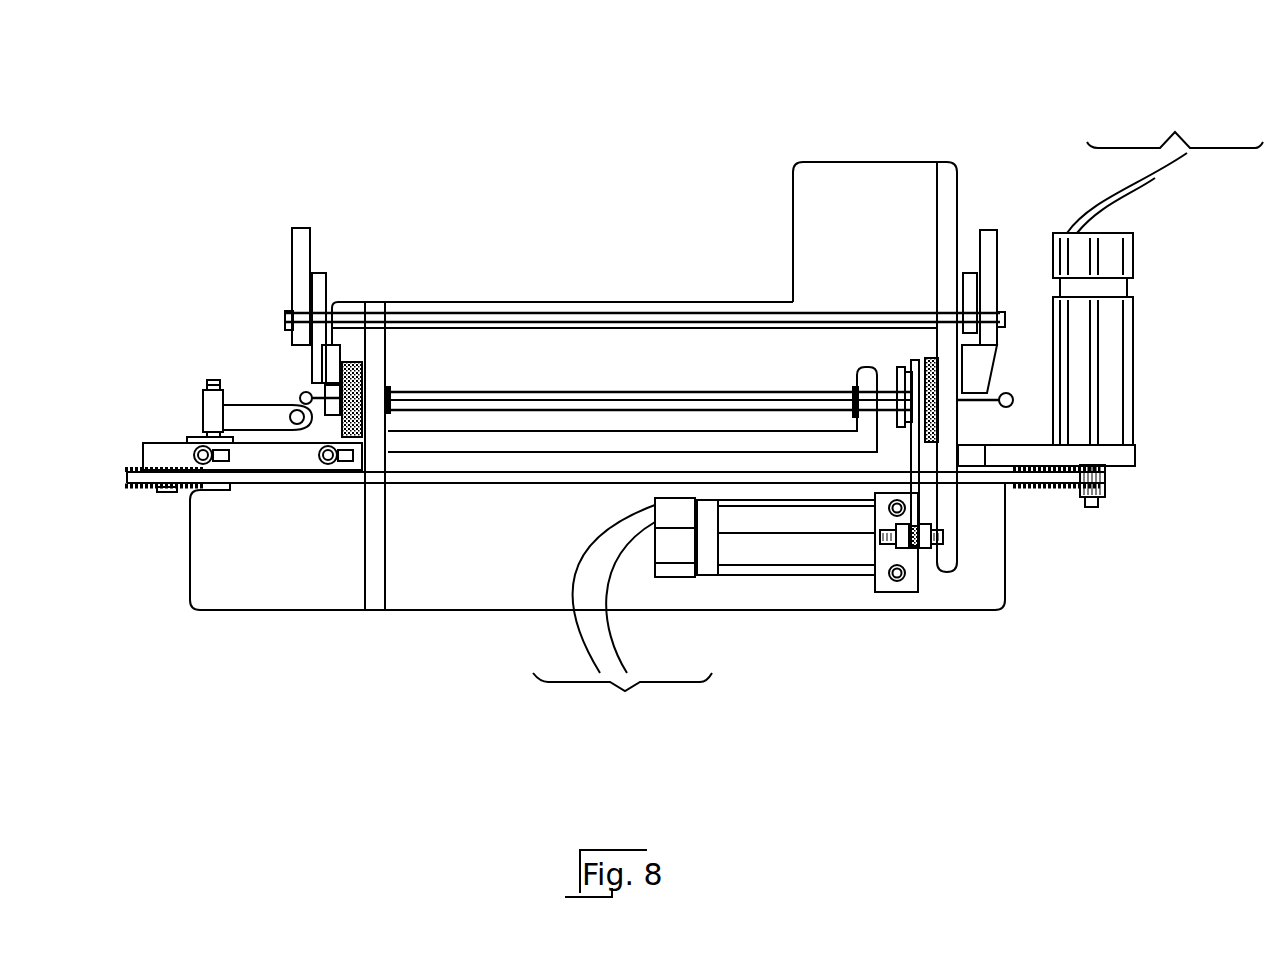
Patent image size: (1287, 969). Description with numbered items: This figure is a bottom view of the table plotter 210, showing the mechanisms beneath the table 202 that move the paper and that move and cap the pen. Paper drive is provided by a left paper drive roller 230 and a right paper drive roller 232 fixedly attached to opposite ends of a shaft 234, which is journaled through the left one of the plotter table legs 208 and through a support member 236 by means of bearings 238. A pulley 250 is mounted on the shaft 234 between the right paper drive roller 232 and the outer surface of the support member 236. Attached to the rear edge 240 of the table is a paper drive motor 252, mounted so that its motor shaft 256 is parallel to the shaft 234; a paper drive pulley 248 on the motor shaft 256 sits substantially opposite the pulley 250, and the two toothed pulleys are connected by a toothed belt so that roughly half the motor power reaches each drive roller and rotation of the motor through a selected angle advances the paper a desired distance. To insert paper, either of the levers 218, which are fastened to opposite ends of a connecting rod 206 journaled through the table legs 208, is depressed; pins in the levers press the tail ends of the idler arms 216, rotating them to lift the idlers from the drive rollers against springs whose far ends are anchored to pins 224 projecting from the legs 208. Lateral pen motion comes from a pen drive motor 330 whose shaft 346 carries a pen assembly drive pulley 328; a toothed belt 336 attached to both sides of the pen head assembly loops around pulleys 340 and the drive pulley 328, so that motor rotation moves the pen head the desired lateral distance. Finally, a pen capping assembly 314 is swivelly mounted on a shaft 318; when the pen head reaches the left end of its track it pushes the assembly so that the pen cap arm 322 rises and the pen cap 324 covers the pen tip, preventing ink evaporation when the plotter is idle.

The table 202 is at (413, 300).
The connecting rod 206 is at (697, 320).
The plotter table legs 208 is at (375, 304).
The table plotter 210 is at (498, 287).
The idler arms 216 is at (307, 393).
The levers 218 is at (305, 228).
The pins 224 is at (305, 396).
The left paper drive roller 230 is at (338, 300).
The right paper drive roller 232 is at (930, 358).
The shaft 234 is at (515, 390).
The support member 236 is at (853, 418).
The bearings 238 is at (392, 385).
The rear edge 240 is at (520, 610).
The paper drive pulley 248 is at (905, 548).
The pulley 250 is at (912, 360).
The paper drive motor 252 is at (742, 580).
The motor shaft 256 is at (943, 535).
The pen capping assembly 314 is at (190, 410).
The shaft 318 is at (215, 376).
The pen cap arm 322 is at (257, 432).
The pen cap 324 is at (297, 425).
The pen assembly drive pulley 328 is at (1107, 492).
The pen drive motor 330 is at (1135, 263).
The toothed belt 336 is at (503, 482).
The pulleys 340 is at (140, 490).
The shaft 346 is at (1093, 507).